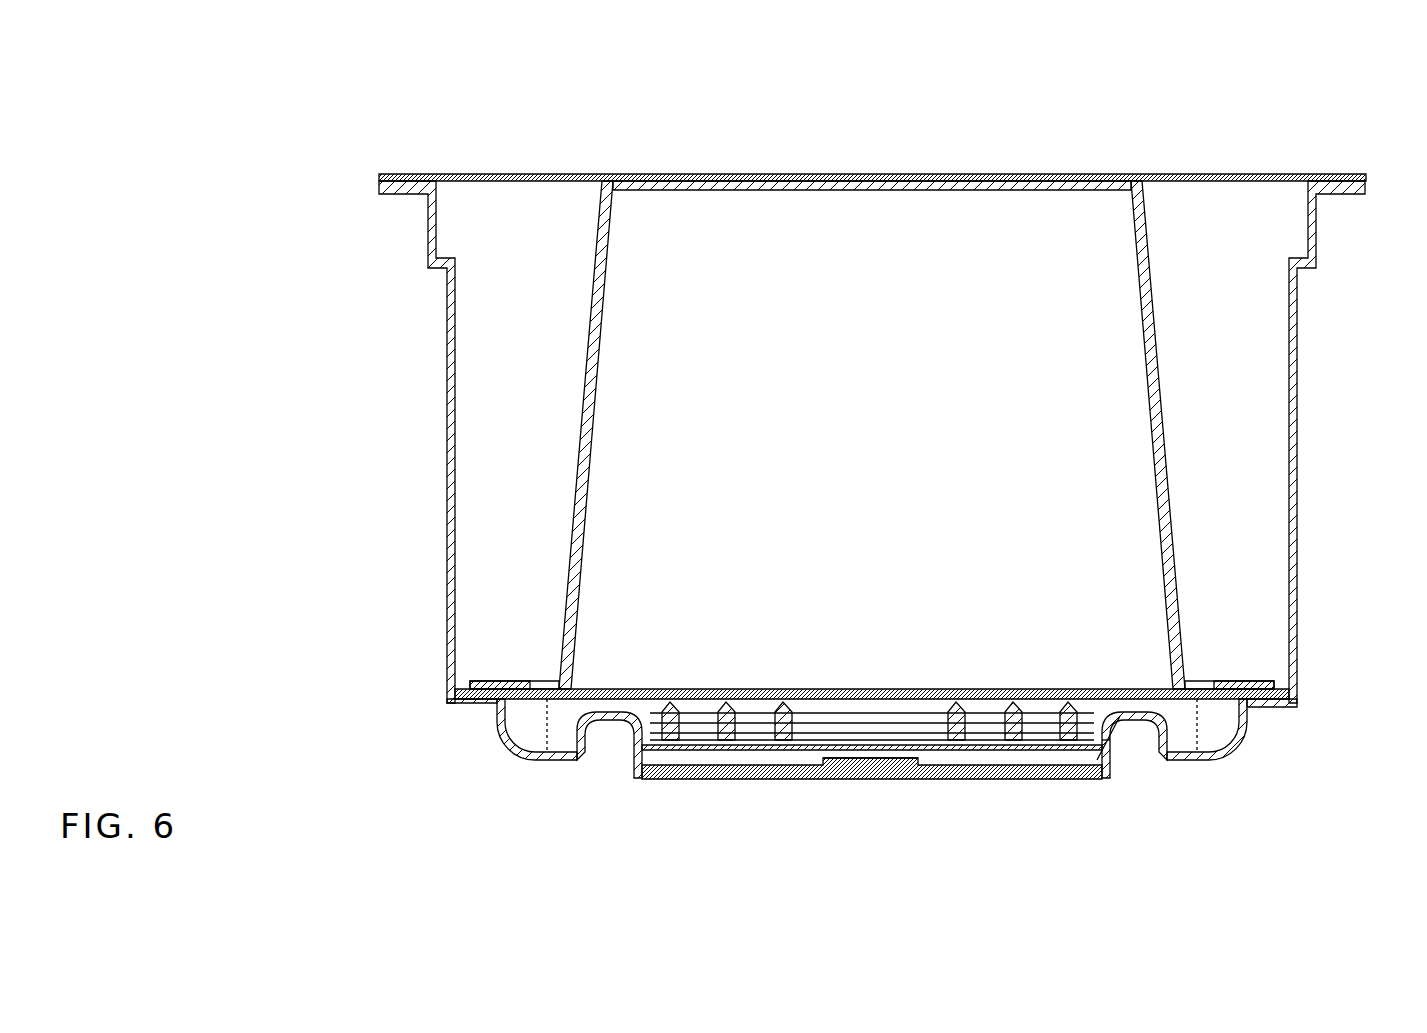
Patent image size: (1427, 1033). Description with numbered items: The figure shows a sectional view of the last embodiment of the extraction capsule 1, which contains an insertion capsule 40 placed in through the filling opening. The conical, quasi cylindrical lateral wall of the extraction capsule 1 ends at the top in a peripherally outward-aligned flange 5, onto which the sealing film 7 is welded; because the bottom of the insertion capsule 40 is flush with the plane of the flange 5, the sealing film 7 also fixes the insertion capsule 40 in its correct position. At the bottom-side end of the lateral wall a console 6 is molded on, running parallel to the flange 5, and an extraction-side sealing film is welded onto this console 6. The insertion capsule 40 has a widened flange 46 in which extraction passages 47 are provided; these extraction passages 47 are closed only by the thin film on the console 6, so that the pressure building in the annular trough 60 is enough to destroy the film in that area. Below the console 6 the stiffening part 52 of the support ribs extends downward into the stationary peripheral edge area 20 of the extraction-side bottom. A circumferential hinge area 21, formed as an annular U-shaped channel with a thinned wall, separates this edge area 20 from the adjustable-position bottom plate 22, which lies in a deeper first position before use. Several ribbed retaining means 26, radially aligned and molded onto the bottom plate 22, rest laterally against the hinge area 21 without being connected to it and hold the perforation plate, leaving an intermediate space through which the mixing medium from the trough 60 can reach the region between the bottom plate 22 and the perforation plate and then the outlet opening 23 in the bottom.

The extraction capsule 1 is at (355, 302).
The flange 5 is at (393, 172).
The console 6 is at (455, 705).
The sealing film 7 is at (552, 170).
The edge area 20 is at (555, 760).
The hinge area 21 is at (593, 730).
The bottom plate 22 is at (726, 762).
The outlet opening 23 is at (870, 600).
The retaining means 26 is at (1103, 758).
The insertion capsule 40 is at (884, 305).
The flange 46 is at (1293, 657).
The extraction passages 47 is at (1220, 688).
The stiffening part 52 is at (523, 723).
The annular trough 60 is at (548, 334).